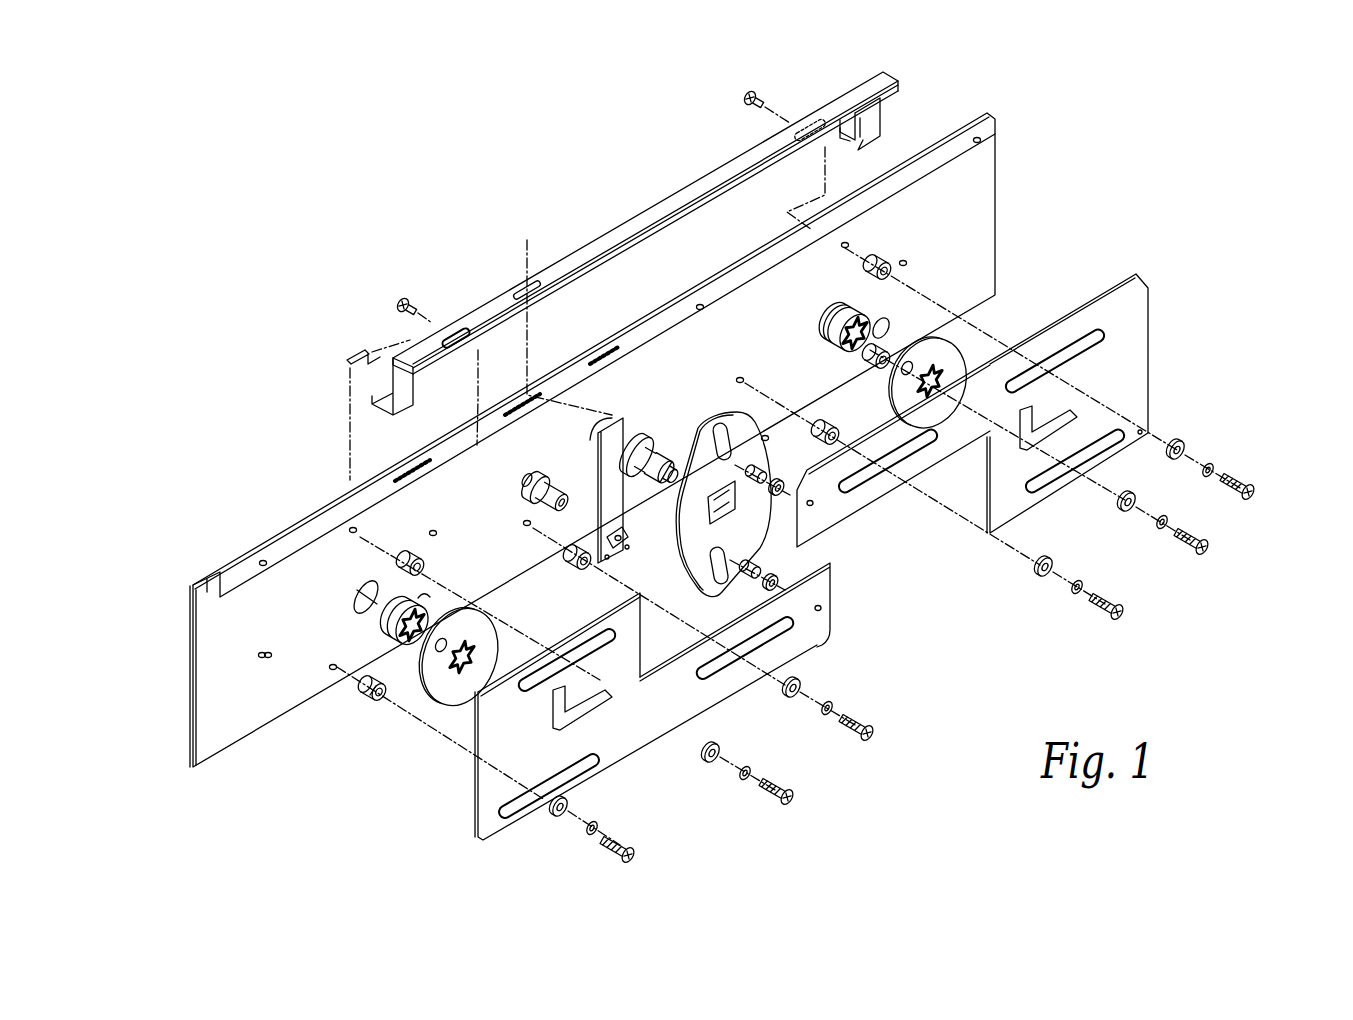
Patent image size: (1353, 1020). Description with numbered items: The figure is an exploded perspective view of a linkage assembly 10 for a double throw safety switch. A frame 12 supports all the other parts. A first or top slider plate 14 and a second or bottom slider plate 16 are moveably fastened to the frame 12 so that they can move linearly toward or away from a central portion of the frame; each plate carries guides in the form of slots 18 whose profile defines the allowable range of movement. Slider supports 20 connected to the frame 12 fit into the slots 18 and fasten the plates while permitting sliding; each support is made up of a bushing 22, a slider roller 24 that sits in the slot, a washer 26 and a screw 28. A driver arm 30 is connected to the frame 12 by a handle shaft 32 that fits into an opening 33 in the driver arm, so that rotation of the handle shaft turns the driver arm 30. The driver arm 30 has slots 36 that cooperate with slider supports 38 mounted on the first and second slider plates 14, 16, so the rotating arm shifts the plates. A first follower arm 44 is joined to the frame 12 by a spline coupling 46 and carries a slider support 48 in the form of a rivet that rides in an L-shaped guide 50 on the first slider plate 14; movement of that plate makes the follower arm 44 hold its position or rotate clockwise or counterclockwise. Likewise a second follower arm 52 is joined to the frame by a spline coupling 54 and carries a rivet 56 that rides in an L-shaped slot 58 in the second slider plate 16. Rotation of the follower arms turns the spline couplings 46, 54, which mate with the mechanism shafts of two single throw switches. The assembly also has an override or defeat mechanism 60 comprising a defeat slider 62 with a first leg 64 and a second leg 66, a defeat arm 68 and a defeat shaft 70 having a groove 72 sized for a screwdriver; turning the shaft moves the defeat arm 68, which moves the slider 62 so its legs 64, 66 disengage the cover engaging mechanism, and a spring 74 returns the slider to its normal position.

The linkage assembly 10 is at (415, 815).
The frame 12 is at (212, 768).
The first slider plate 14 is at (1130, 263).
The second slider plate 16 is at (825, 640).
The slots 18 is at (590, 640).
The slider supports 20 is at (372, 702).
The bushing 22 is at (410, 558).
The slider roller 24 is at (1185, 445).
The washer 26 is at (1215, 465).
The screw 28 is at (1255, 488).
The driver arm 30 is at (709, 403).
The handle shaft 32 is at (650, 438).
The opening 33 is at (700, 514).
The slots 36 is at (730, 437).
The slider supports 38 is at (760, 476).
The first follower arm 44 is at (971, 361).
The spline coupling 46 is at (830, 338).
The slider support 48 is at (878, 343).
The guide 50 is at (1040, 452).
The second follower arm 52 is at (492, 655).
The spline coupling 54 is at (395, 603).
The rivet 56 is at (435, 658).
The L-shaped slot 58 is at (553, 712).
The override mechanism 60 is at (731, 140).
The slider 62 is at (843, 102).
The first leg 64 is at (848, 142).
The second leg 66 is at (380, 410).
The defeat arm 68 is at (616, 410).
The defeat shaft 70 is at (550, 468).
The groove 72 is at (625, 535).
The spring 74 is at (358, 356).